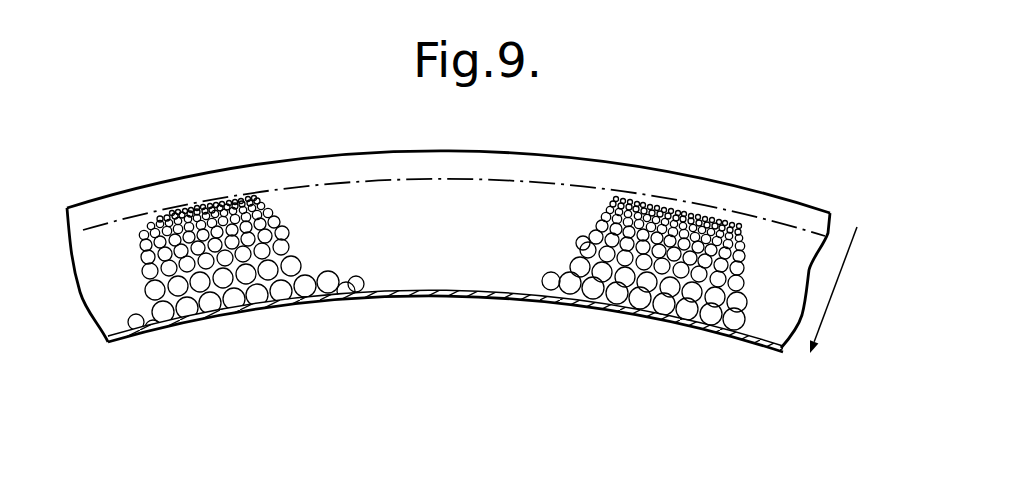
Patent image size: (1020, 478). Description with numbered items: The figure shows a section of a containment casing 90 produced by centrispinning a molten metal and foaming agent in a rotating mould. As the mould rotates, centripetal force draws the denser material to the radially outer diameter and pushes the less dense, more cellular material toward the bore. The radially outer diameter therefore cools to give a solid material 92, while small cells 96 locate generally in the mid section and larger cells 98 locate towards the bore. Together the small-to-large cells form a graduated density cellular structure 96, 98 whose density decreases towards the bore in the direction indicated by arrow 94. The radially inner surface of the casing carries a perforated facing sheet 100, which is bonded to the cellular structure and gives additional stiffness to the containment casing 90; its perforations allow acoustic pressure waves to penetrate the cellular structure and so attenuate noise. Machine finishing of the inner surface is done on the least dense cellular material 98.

The containment casing 90 is at (169, 362).
The solid material 92 is at (702, 197).
The arrow 94 is at (823, 308).
The small cells 96 is at (290, 212).
The larger cells 98 is at (364, 270).
The perforated facing sheet 100 is at (663, 313).